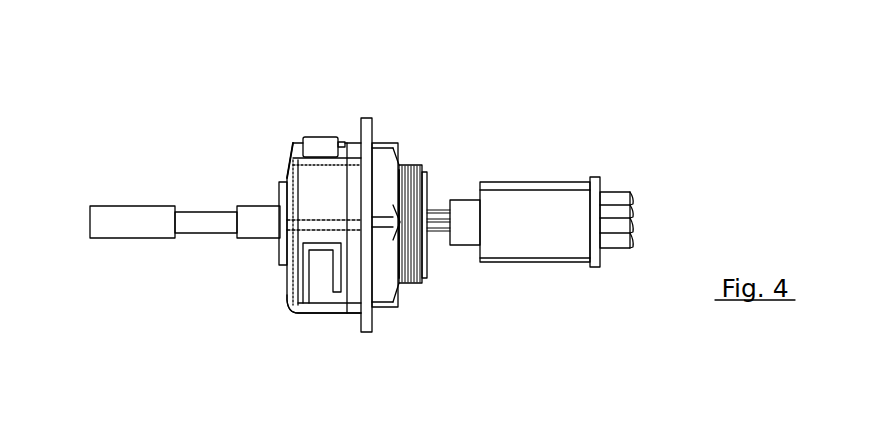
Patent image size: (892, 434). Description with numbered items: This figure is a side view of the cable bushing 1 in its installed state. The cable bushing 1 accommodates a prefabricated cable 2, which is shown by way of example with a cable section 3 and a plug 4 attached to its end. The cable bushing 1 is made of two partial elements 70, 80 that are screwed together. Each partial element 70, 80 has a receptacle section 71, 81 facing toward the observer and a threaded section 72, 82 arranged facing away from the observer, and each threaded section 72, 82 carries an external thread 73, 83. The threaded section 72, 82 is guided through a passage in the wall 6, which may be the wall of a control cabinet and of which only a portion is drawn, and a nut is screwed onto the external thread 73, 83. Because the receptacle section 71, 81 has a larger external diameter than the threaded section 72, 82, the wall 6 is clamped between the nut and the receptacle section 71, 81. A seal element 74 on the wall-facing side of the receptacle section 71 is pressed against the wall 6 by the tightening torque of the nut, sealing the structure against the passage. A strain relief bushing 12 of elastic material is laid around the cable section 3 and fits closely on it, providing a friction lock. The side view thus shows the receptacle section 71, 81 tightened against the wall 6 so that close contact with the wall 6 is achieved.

The cable bushing 1 is at (238, 125).
The prefabricated cable 2 is at (117, 222).
The cable section 3 is at (245, 213).
The plug 4 is at (537, 200).
The wall 6 is at (366, 327).
The strain relief bushing 12 is at (280, 246).
The partial element 70 is at (285, 276).
The receptacle section 71 is at (296, 303).
The threaded section 72 is at (422, 260).
The external thread 73 is at (387, 268).
The seal element 74 is at (347, 296).
The partial element 80 is at (293, 142).
The receptacle section 81 is at (320, 145).
The threaded section 82 is at (427, 178).
The external thread 83 is at (410, 165).